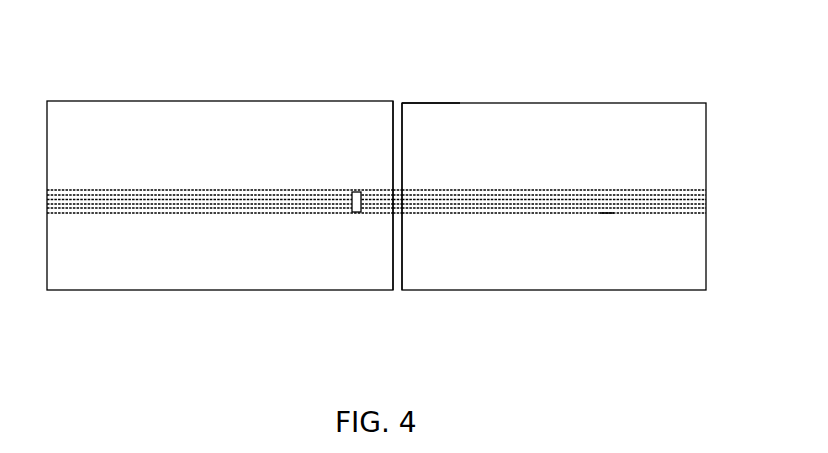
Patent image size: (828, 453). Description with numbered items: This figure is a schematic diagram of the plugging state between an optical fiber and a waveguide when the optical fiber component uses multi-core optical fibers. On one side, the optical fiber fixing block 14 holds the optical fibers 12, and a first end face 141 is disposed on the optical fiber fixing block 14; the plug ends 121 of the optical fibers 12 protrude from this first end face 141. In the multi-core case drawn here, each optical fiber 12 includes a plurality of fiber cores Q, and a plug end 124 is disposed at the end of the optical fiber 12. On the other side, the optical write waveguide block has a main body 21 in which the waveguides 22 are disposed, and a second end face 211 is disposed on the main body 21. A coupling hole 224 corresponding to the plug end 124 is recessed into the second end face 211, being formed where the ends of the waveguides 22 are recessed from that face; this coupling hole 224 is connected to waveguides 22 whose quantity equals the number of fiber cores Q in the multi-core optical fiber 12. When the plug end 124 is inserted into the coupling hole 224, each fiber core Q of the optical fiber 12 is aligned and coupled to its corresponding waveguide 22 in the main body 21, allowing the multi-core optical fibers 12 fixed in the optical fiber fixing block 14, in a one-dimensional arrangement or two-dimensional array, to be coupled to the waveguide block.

The main body 21 is at (342, 147).
The second end face 211 is at (399, 133).
The waveguides 22 is at (269, 212).
The coupling hole 224 is at (352, 208).
The optical fiber fixing block 14 is at (513, 142).
The first end face 141 is at (448, 142).
The plug ends 121 is at (393, 143).
The plug end 124 is at (377, 213).
The optical fibers 12 is at (552, 213).
The fiber cores Q is at (607, 212).